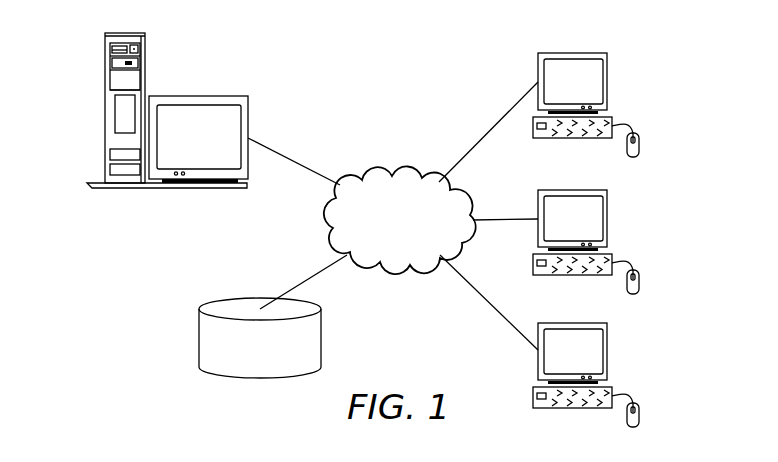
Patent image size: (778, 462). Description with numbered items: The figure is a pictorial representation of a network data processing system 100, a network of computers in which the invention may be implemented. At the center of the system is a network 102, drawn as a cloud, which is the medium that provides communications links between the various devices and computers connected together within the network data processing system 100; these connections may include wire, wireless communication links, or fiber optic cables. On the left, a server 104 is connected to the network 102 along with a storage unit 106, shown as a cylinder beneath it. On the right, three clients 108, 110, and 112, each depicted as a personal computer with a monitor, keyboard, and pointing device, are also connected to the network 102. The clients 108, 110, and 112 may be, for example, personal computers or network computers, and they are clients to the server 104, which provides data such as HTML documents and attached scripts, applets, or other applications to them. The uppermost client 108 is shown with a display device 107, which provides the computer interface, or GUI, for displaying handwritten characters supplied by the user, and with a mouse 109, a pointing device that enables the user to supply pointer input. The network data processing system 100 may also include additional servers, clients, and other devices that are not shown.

The network data processing system 100 is at (455, 57).
The network 102 is at (376, 175).
The server 104 is at (105, 112).
The storage unit 106 is at (199, 338).
The display device 107 is at (572, 62).
The client 108 is at (618, 88).
The mouse 109 is at (641, 140).
The client 110 is at (608, 218).
The client 112 is at (608, 350).